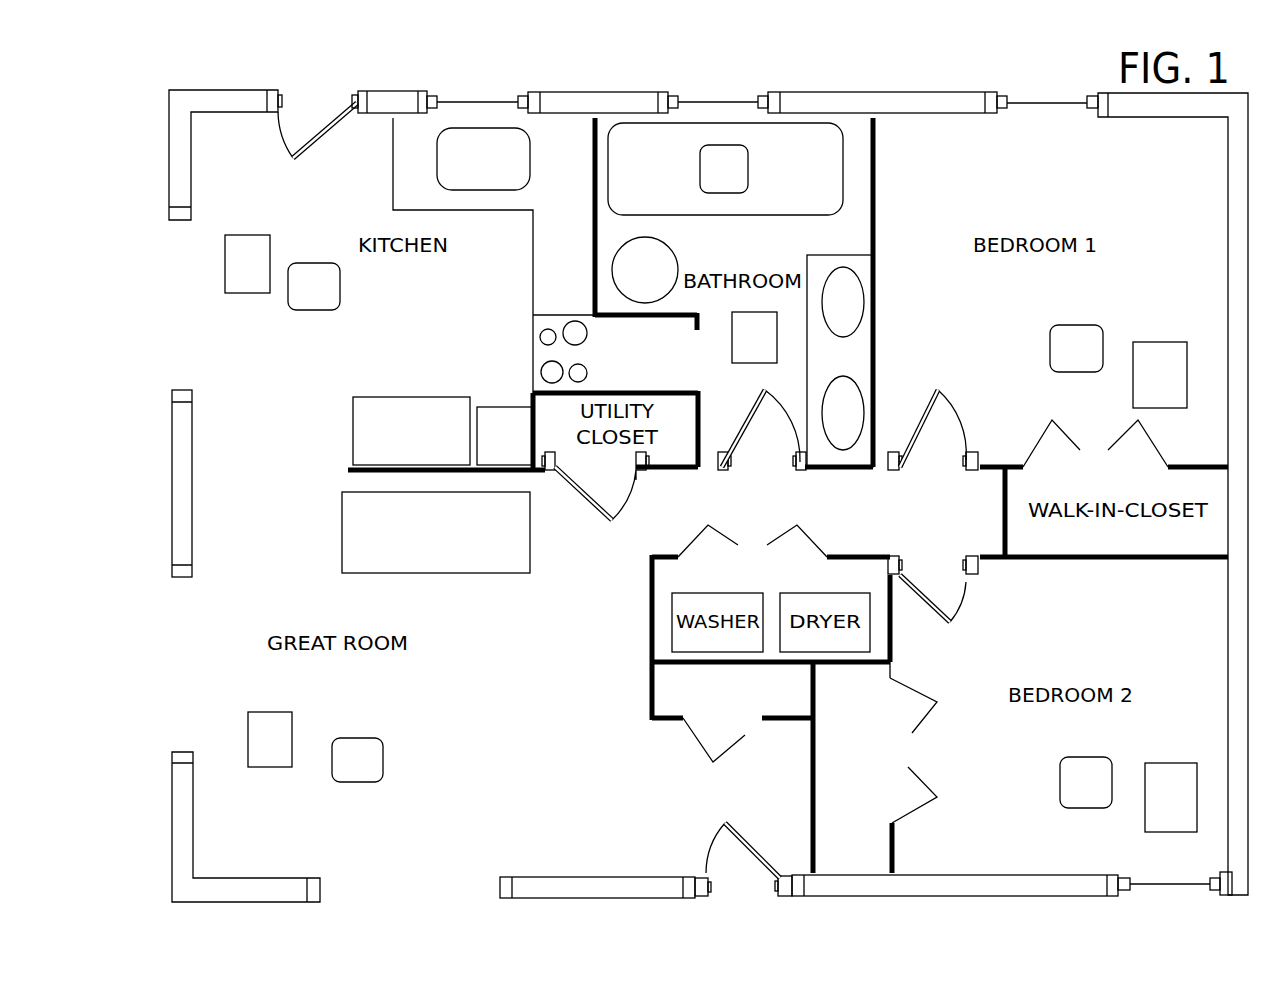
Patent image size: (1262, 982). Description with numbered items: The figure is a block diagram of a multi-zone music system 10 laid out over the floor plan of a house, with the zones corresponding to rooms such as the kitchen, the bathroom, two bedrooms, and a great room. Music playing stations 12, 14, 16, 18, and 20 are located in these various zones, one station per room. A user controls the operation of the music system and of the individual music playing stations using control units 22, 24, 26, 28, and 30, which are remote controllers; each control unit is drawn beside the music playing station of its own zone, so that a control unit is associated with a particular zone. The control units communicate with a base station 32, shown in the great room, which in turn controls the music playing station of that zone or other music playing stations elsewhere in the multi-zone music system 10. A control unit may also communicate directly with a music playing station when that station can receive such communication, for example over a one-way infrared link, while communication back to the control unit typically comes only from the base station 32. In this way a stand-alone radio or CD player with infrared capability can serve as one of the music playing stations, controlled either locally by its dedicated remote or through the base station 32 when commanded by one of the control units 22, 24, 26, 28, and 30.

The multi-zone music system 10 is at (291, 81).
The music playing station 12 is at (236, 266).
The music playing station 14 is at (700, 389).
The music playing station 16 is at (1150, 376).
The music playing station 18 is at (259, 743).
The music playing station 20 is at (1160, 802).
The control unit 22 is at (303, 299).
The control unit 24 is at (713, 181).
The control unit 26 is at (1066, 360).
The control unit 28 is at (346, 772).
The control unit 30 is at (1075, 794).
The base station 32 is at (409, 539).